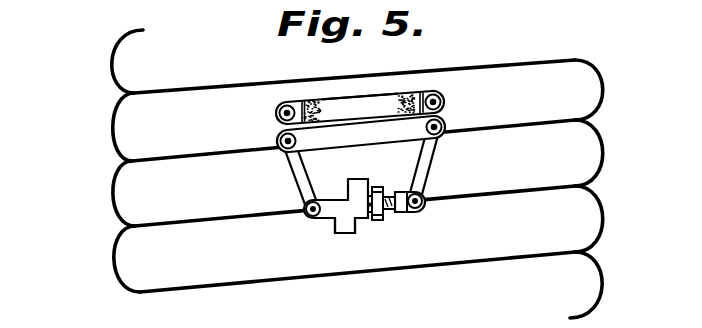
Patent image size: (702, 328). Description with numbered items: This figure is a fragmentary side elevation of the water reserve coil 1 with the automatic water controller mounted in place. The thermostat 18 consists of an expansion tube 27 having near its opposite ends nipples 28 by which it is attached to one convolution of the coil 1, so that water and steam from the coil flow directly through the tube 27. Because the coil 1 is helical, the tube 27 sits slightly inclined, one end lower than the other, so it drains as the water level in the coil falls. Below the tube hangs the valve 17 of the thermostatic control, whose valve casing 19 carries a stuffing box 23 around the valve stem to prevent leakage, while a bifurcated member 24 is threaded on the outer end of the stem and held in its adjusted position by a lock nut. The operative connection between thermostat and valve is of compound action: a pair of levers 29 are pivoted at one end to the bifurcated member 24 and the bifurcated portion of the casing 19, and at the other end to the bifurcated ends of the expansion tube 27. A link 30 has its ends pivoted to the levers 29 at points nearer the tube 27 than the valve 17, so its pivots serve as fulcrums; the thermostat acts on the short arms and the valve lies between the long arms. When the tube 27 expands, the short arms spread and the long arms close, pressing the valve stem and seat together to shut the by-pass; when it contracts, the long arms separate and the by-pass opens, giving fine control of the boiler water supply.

The water reserve coil 1 is at (117, 120).
The valve 17 is at (325, 227).
The thermostat 18 is at (346, 98).
The valve casing 19 is at (361, 207).
The stuffing box 23 is at (383, 220).
The bifurcated member 24 is at (418, 208).
The expansion tube 27 is at (369, 105).
The nipples 28 is at (306, 105).
The levers 29 is at (288, 160).
The link 30 is at (358, 138).